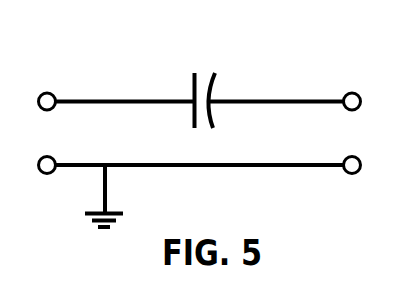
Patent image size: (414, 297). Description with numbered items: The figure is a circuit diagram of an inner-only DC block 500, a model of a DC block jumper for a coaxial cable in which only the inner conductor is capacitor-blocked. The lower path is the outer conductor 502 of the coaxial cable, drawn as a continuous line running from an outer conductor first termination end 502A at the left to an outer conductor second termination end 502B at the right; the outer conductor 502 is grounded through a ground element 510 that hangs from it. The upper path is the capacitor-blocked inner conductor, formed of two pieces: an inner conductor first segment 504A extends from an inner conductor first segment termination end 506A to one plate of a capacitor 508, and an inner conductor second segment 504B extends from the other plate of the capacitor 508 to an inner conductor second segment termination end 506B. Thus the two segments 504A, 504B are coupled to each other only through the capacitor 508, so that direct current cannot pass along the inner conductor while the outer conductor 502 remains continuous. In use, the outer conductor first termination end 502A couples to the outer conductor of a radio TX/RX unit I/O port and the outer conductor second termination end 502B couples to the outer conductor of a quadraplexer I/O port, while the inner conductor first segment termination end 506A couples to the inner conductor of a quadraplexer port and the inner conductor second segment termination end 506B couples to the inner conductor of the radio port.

The inner-only DC block 500 is at (334, 66).
The outer conductor 502 is at (237, 163).
The outer conductor first termination end 502A is at (56, 158).
The outer conductor second termination end 502B is at (360, 157).
The inner conductor first segment 504A is at (122, 101).
The inner conductor second segment 504B is at (235, 101).
The inner conductor first segment termination end 506A is at (57, 93).
The inner conductor second segment termination end 506B is at (359, 95).
The capacitor 508 is at (222, 63).
The ground element 510 is at (107, 202).